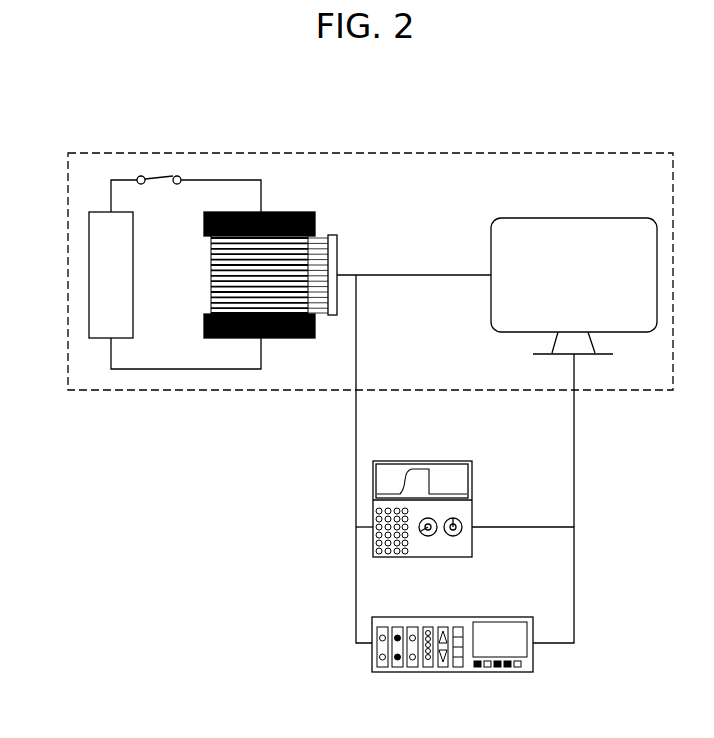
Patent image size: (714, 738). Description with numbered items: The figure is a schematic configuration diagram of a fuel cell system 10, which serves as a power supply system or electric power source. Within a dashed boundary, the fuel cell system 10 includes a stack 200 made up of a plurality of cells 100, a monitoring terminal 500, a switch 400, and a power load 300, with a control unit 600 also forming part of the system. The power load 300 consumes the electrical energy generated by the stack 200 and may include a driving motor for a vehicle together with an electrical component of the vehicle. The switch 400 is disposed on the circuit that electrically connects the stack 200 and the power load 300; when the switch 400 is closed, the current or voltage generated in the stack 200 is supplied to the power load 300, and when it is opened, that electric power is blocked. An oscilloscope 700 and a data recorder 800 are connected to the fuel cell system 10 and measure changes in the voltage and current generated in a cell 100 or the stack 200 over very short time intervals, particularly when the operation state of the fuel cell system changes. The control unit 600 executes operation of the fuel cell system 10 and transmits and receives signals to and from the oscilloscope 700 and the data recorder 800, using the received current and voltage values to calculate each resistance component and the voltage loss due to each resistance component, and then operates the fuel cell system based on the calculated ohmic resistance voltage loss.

The fuel cell system 10 is at (114, 392).
The cell 100 is at (211, 275).
The stack 200 is at (288, 348).
The power load 300 is at (89, 275).
The switch 400 is at (157, 173).
The monitoring terminal 500 is at (333, 232).
The control unit 600 is at (574, 286).
The oscilloscope 700 is at (373, 480).
The data recorder 800 is at (372, 658).